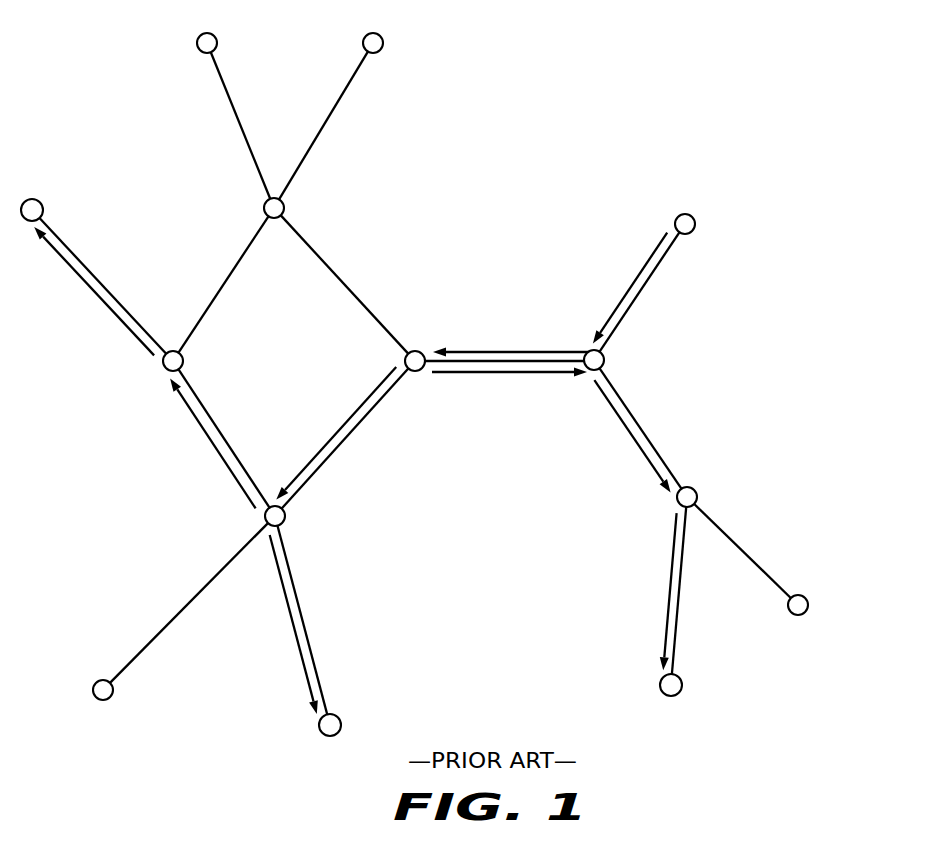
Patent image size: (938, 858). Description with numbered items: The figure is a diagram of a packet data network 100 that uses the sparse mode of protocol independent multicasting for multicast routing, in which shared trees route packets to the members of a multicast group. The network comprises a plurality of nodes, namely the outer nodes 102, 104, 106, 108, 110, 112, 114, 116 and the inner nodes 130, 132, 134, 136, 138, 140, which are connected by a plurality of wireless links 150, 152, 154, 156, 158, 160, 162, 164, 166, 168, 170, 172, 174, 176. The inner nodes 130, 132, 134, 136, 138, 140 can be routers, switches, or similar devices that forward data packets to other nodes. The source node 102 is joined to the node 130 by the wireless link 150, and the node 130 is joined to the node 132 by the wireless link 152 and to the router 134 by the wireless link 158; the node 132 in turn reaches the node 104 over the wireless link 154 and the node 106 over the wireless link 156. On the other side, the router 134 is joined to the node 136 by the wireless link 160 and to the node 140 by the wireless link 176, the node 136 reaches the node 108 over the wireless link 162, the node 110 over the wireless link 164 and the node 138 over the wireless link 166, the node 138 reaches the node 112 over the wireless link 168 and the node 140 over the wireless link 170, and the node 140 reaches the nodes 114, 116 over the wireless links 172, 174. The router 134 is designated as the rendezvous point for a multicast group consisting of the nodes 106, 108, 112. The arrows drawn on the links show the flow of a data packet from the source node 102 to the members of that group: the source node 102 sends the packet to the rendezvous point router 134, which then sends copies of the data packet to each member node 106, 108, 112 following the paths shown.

The prior art multicast network 100 is at (231, 794).
The source node 102 is at (695, 224).
The node 104 is at (808, 605).
The node 106 is at (682, 686).
The node 108 is at (341, 725).
The node 110 is at (113, 690).
The node 112 is at (36, 201).
The node 114 is at (214, 35).
The node 116 is at (380, 35).
The node 130 is at (604, 360).
The node 132 is at (697, 496).
The router 134 is at (415, 371).
The node 136 is at (285, 517).
The node 138 is at (184, 361).
The node 140 is at (284, 208).
The wireless link 150 is at (641, 292).
The wireless link 152 is at (639, 426).
The wireless link 154 is at (745, 554).
The wireless link 156 is at (680, 591).
The wireless link 158 is at (477, 362).
The wireless link 160 is at (346, 437).
The wireless link 162 is at (303, 620).
The wireless link 164 is at (190, 604).
The wireless link 166 is at (229, 432).
The wireless link 168 is at (96, 278).
The wireless link 170 is at (228, 281).
The wireless link 172 is at (225, 86).
The wireless link 174 is at (346, 88).
The wireless link 176 is at (338, 277).